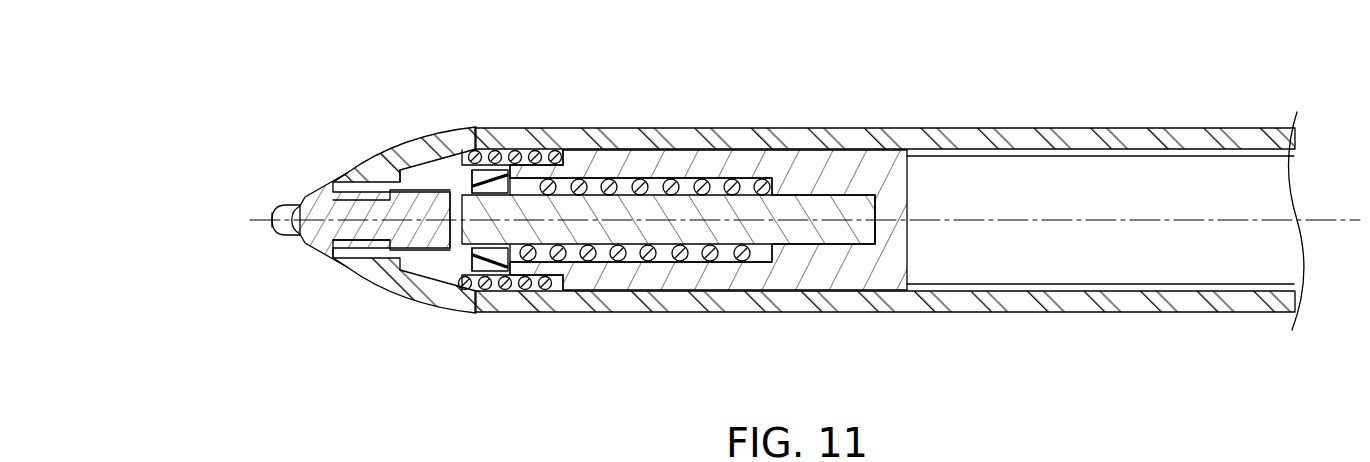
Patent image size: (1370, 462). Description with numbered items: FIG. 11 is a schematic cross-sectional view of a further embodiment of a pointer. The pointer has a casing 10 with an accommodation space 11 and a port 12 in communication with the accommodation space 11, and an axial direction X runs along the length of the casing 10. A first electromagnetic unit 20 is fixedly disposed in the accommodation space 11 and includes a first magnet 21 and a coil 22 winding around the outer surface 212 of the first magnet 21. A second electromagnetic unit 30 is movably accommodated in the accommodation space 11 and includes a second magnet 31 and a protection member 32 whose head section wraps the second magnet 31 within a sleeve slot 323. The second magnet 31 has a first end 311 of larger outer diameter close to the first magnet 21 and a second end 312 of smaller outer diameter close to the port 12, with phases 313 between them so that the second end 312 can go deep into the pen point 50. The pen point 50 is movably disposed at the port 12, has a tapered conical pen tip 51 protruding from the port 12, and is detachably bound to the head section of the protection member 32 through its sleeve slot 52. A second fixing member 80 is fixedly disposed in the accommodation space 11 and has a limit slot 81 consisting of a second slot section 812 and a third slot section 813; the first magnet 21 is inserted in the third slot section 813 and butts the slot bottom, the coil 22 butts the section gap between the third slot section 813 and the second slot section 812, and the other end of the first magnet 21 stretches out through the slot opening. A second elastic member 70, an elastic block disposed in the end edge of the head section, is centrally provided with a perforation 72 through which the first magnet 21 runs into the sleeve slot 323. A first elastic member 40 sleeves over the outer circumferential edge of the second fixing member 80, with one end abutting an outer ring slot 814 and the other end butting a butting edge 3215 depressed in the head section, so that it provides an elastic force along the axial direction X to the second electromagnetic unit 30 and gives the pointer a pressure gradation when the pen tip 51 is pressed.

The casing 10 is at (1174, 128).
The accommodation space 11 is at (506, 168).
The port 12 is at (343, 171).
The first electromagnetic unit 20 is at (833, 63).
The first magnet 21 is at (820, 207).
The coil 22 is at (722, 212).
The outer surface 212 is at (650, 190).
The second electromagnetic unit 30 is at (325, 195).
The second magnet 31 is at (450, 180).
The first end 311 is at (524, 172).
The second end 312 is at (345, 167).
The phase 313 is at (384, 179).
The protection member 32 is at (363, 244).
The butting edge 3215 is at (474, 180).
The sleeve slot 323 is at (490, 172).
The first elastic member 40 is at (562, 152).
The pen point 50 is at (282, 234).
The pen tip 51 is at (268, 220).
The sleeve slot 52 is at (292, 210).
The second elastic member 70 is at (473, 255).
The perforation 72 is at (497, 246).
The second fixing member 80 is at (907, 232).
The limit slot 81 is at (890, 370).
The second slot section 812 is at (628, 268).
The third slot section 813 is at (838, 262).
The outer ring slot 814 is at (565, 278).
The axial direction X is at (1318, 220).